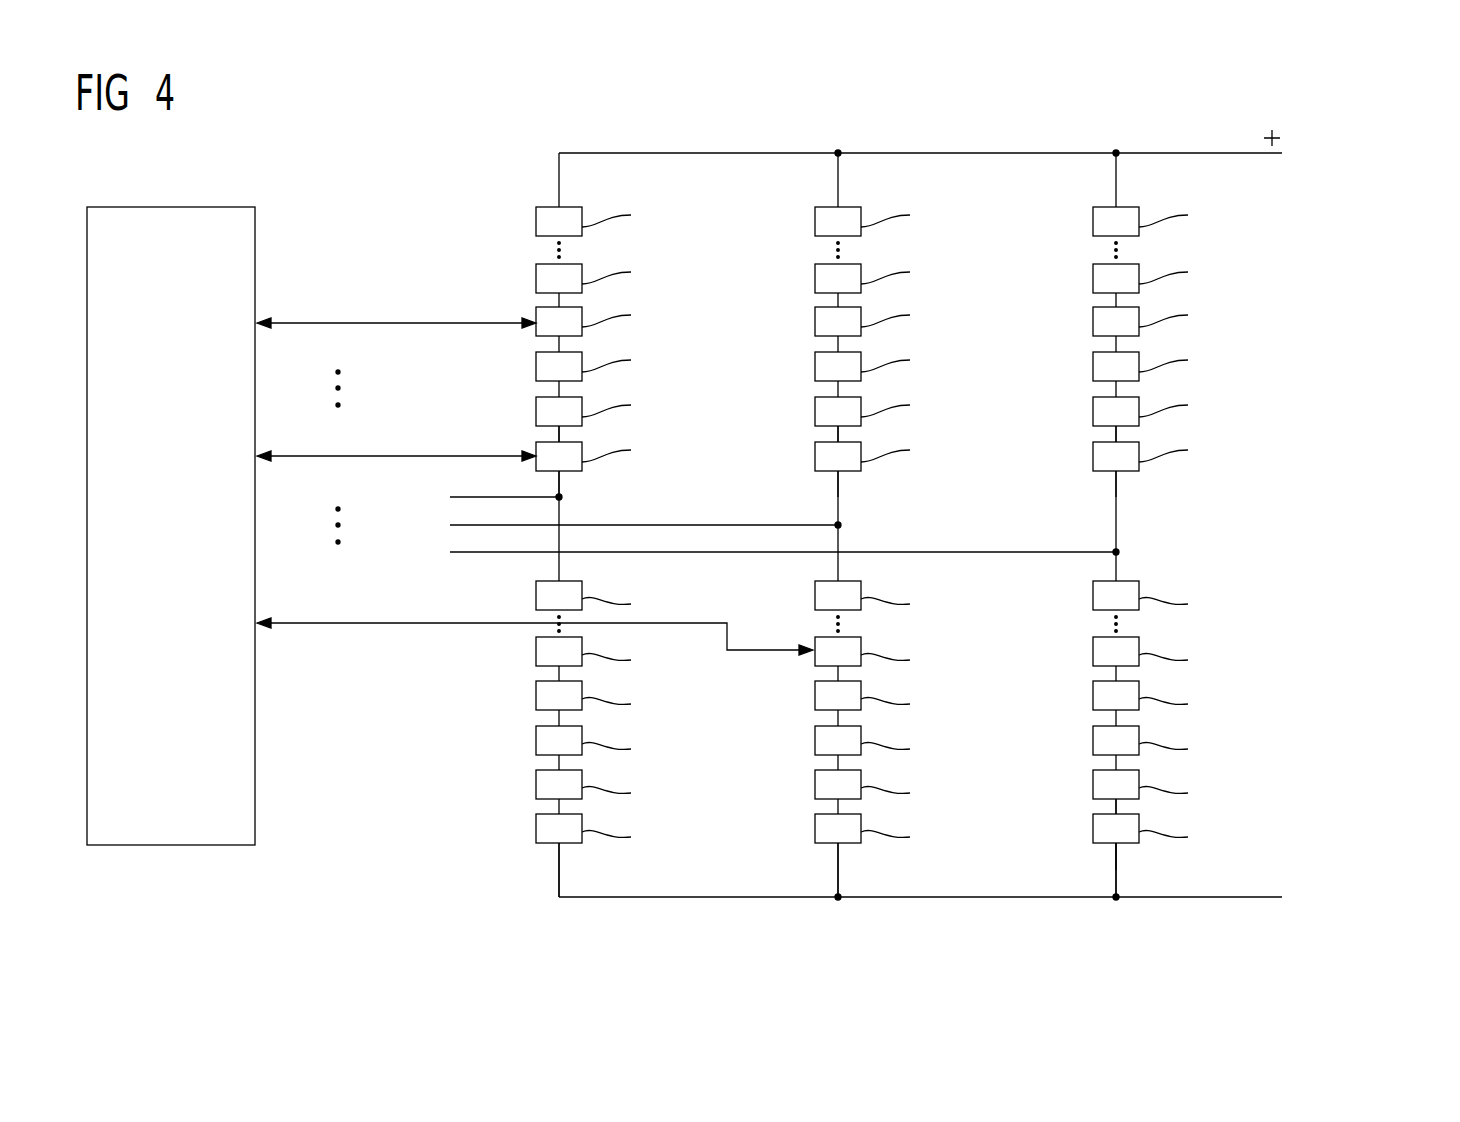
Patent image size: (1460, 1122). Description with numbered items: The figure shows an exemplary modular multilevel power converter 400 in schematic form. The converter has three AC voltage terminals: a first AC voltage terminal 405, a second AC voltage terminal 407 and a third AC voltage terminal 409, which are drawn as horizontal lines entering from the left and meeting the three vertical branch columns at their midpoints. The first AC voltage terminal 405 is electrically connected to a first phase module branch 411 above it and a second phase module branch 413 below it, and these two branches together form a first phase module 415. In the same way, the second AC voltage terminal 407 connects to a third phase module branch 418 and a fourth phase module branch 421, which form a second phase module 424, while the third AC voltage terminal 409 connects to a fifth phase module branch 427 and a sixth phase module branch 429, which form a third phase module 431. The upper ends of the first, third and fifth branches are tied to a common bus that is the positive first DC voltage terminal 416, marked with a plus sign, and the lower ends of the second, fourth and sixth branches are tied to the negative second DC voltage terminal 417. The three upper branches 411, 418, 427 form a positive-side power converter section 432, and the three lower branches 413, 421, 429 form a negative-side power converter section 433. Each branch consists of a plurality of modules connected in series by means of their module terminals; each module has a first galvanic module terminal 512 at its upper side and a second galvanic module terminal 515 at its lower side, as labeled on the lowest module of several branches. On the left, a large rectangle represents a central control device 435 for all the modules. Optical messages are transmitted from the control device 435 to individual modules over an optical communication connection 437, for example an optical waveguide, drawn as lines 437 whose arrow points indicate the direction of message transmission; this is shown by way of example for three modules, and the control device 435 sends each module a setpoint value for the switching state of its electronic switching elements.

The modular multilevel power converter 400 is at (1346, 132).
The first AC voltage terminal 405 is at (450, 497).
The second AC voltage terminal 407 is at (450, 525).
The third AC voltage terminal 409 is at (450, 552).
The first phase module branch 411 is at (578, 483).
The second phase module branch 413 is at (539, 873).
The first phase module 415 is at (622, 908).
The first DC voltage terminal 416 is at (1250, 154).
The second DC voltage terminal 417 is at (1250, 897).
The third phase module branch 418 is at (857, 483).
The fourth phase module branch 421 is at (818, 873).
The second phase module 424 is at (901, 908).
The fifth phase module branch 427 is at (1135, 483).
The sixth phase module branch 429 is at (1096, 873).
The third phase module 431 is at (1178, 908).
The positive-side power converter section 432 is at (1282, 333).
The negative-side power converter section 433 is at (1282, 728).
The control device 435 is at (165, 848).
The optical communication connection 437 is at (310, 322).
The first galvanic module terminal 512 is at (545, 443).
The second galvanic module terminal 515 is at (555, 472).